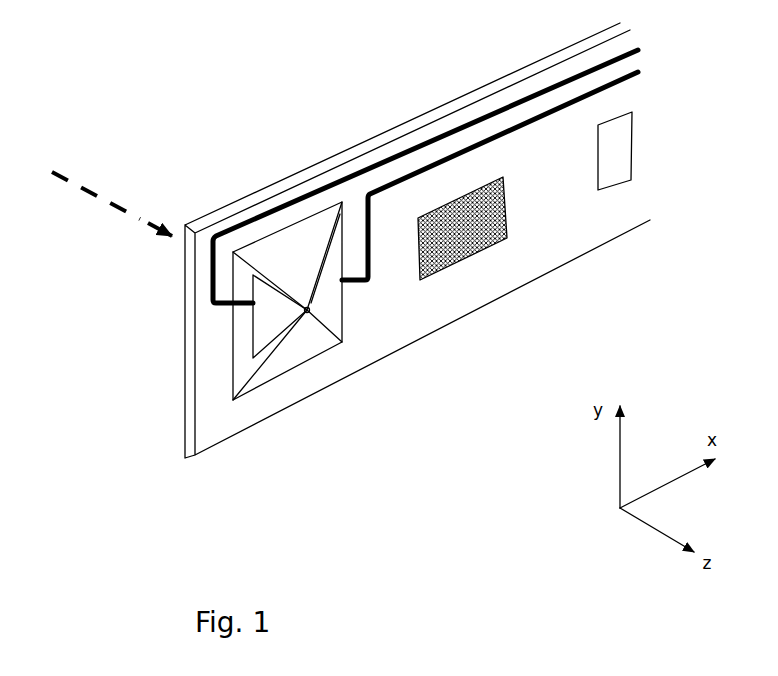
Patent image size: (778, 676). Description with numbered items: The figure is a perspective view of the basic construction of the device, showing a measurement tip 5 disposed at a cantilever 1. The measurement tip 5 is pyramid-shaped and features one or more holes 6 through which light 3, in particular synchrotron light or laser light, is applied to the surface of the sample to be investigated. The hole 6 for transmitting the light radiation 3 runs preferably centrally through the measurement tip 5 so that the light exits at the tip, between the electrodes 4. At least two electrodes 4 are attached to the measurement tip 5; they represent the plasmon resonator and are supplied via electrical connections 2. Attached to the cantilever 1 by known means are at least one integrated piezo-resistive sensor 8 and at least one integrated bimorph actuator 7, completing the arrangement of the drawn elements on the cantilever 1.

The cantilever 1 is at (622, 239).
The electrical connections 2 is at (641, 70).
The light 3 is at (112, 191).
The electrodes 4 is at (252, 328).
The measurement tip 5 is at (232, 377).
The hole 6 is at (307, 320).
The integrated bimorph actuator 7 is at (467, 264).
The integrated piezo-resistive sensor 8 is at (597, 195).